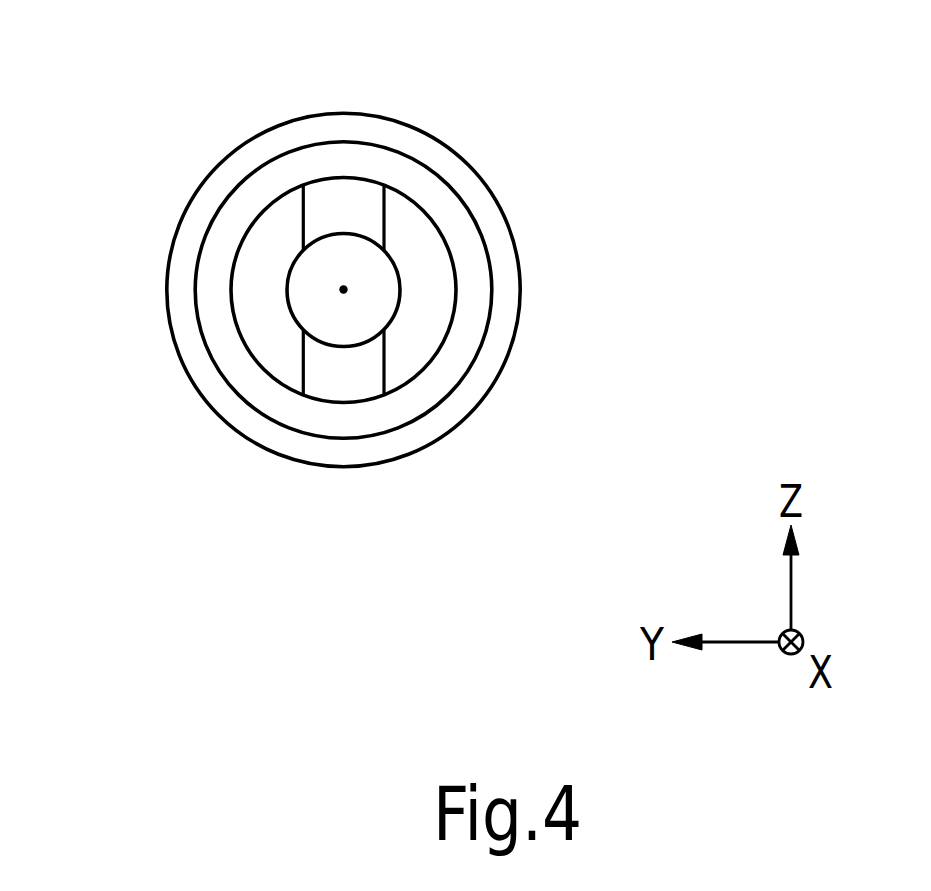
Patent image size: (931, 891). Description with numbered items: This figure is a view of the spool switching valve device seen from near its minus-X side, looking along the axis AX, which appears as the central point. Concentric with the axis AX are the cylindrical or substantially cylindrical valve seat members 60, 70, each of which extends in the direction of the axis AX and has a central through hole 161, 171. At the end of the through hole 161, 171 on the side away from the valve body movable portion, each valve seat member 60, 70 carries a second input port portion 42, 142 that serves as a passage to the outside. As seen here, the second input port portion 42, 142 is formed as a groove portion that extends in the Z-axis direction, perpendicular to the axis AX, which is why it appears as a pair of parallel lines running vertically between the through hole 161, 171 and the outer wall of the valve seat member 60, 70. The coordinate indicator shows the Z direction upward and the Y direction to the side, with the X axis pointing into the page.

The second input port portion 42 is at (395, 205).
The second input port portion 142 is at (339, 195).
The valve seat member 60 is at (342, 346).
The valve seat member 70 is at (263, 375).
The through hole 161 is at (493, 308).
The through hole 171 is at (368, 290).
The axis AX is at (337, 289).